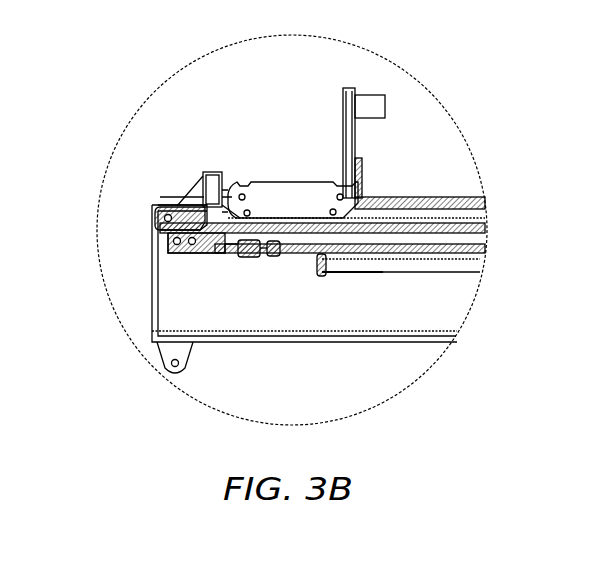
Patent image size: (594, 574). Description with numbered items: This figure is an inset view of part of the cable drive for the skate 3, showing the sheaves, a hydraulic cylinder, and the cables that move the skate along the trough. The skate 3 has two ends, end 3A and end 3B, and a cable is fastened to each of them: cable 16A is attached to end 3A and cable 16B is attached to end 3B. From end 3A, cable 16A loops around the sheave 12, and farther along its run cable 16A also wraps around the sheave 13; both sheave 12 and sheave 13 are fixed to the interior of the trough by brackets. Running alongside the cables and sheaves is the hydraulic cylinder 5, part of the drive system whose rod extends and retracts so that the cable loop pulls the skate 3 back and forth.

The skate 3 is at (286, 203).
The end of skate 3A is at (230, 191).
The end of skate 3B is at (360, 200).
The hydraulic cylinder 5 is at (373, 265).
The sheave 12 is at (177, 205).
The sheave 13 is at (208, 249).
The cable 16A is at (176, 204).
The cable 16B is at (452, 207).